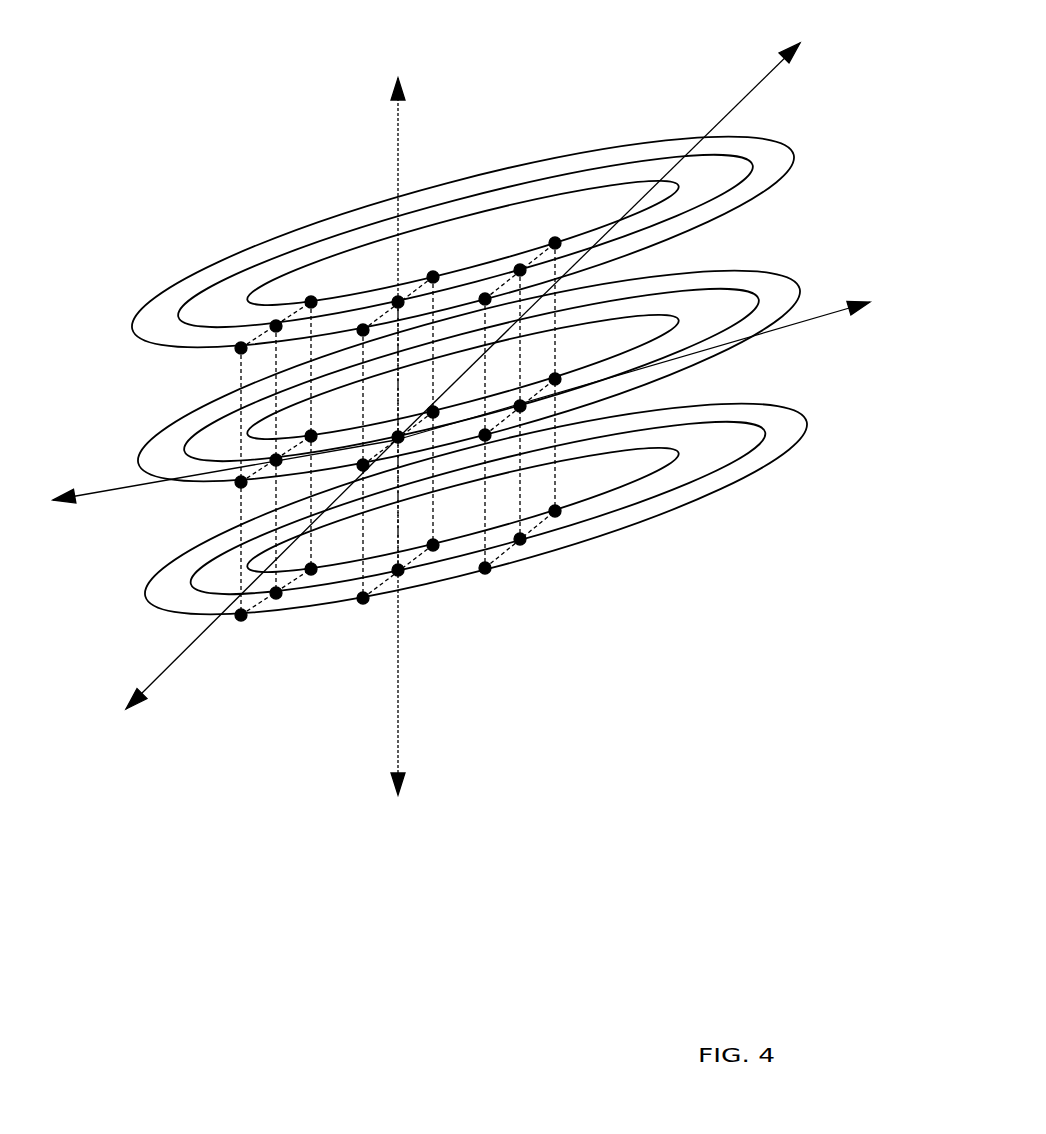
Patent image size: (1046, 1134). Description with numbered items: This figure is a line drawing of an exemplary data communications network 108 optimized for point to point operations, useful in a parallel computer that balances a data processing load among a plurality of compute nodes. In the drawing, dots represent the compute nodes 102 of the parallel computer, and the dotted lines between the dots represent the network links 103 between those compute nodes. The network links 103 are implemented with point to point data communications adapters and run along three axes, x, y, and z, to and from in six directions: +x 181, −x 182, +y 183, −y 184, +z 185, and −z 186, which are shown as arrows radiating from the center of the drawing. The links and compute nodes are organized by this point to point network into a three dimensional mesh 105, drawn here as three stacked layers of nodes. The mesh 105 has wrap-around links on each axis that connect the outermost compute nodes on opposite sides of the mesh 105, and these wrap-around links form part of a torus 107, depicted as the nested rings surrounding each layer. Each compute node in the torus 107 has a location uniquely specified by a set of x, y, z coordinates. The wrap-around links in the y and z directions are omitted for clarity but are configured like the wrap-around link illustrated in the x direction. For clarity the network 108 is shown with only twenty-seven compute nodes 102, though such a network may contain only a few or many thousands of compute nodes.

The compute nodes 102 is at (485, 569).
The network links 103 is at (242, 380).
The three dimensional mesh 105 is at (430, 460).
The torus 107 is at (214, 240).
The data communications network 108 is at (464, 528).
The +x direction 181 is at (878, 333).
The −x direction 182 is at (207, 492).
The +y direction 183 is at (845, 65).
The −y direction 184 is at (117, 763).
The +z direction 185 is at (385, 68).
The −z direction 186 is at (418, 858).